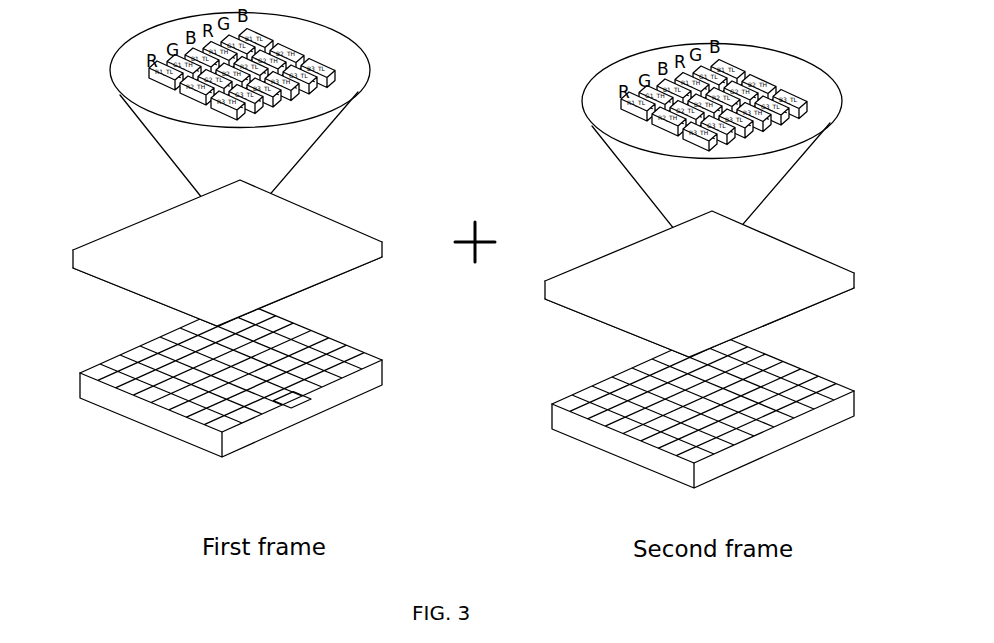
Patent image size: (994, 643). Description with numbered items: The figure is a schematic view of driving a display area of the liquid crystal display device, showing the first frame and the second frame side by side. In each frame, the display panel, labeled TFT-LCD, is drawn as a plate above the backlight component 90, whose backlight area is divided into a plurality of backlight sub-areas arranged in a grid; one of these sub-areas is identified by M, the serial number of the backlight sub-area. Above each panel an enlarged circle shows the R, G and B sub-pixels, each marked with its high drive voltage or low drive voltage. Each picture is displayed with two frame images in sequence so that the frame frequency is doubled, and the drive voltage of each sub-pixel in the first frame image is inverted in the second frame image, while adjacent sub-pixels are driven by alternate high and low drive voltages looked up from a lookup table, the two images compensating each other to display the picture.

The backlight component 90 is at (172, 435).
The serial number of the backlight sub-area M is at (282, 397).
The TFT liquid crystal display panel TFT-LCD is at (204, 253).